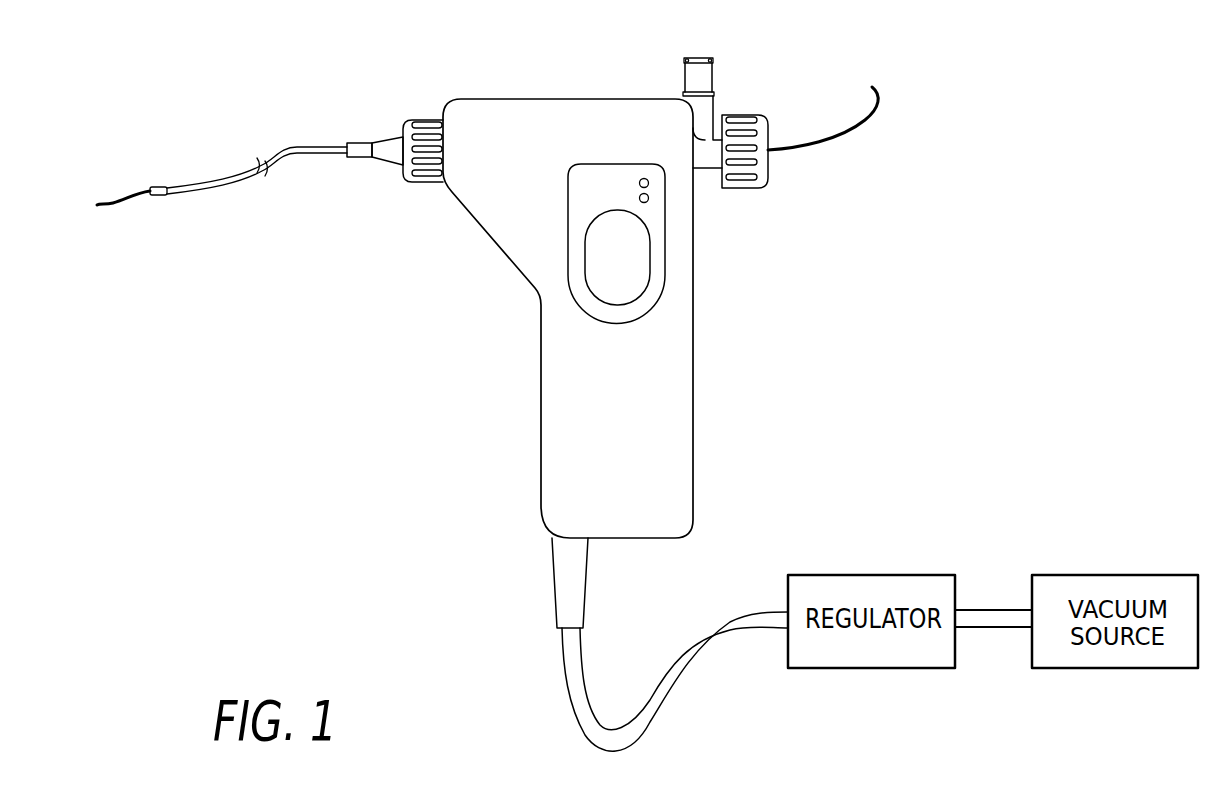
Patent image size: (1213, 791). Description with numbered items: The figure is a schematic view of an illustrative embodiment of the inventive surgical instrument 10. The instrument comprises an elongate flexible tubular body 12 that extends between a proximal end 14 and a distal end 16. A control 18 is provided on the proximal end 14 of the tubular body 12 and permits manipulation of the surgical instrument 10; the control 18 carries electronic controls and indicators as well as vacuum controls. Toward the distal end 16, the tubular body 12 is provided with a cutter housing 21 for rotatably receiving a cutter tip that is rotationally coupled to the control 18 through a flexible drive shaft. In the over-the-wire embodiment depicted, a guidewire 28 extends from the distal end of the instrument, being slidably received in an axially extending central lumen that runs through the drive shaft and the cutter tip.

The surgical instrument 10 is at (470, 378).
The elongate flexible tubular body 12 is at (296, 145).
The proximal end 14 is at (348, 124).
The distal end 16 is at (173, 160).
The control 18 is at (695, 388).
The cutter housing 21 is at (157, 185).
The guidewire 28 is at (108, 207).